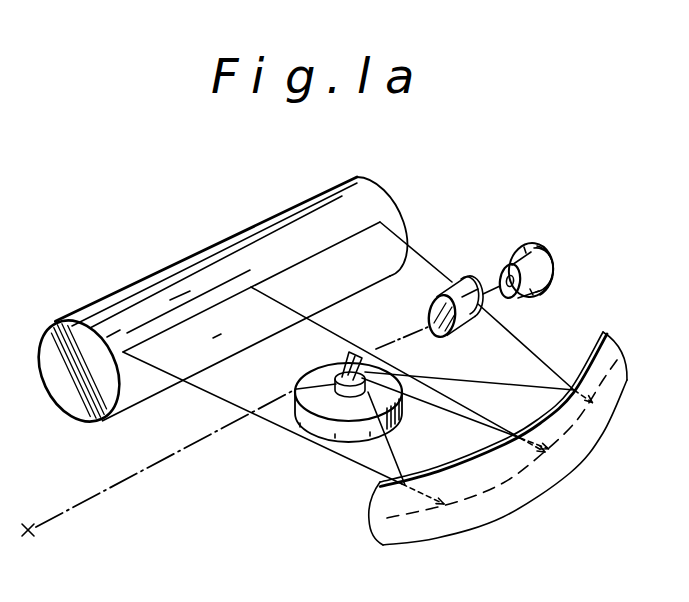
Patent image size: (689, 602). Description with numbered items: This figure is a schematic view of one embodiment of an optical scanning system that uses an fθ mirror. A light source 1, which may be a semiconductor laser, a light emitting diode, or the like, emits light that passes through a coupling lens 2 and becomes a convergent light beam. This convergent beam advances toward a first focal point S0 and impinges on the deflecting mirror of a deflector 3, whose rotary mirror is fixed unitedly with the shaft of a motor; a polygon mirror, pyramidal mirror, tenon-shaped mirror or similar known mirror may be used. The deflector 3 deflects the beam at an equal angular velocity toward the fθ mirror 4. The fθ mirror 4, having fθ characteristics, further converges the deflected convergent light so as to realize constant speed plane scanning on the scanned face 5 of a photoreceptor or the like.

The light source 1 is at (543, 244).
The coupling lens 2 is at (428, 310).
The deflector 3 is at (305, 378).
The fθ mirror 4 is at (608, 353).
The scanned face 5 is at (385, 199).
The first focal point S0 is at (39, 552).